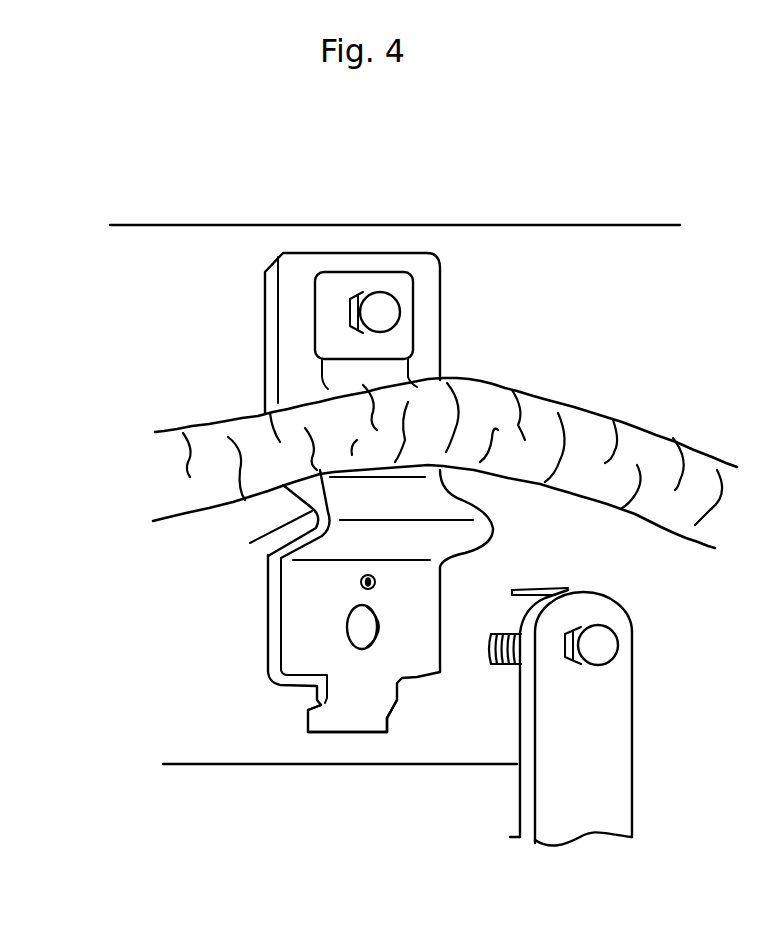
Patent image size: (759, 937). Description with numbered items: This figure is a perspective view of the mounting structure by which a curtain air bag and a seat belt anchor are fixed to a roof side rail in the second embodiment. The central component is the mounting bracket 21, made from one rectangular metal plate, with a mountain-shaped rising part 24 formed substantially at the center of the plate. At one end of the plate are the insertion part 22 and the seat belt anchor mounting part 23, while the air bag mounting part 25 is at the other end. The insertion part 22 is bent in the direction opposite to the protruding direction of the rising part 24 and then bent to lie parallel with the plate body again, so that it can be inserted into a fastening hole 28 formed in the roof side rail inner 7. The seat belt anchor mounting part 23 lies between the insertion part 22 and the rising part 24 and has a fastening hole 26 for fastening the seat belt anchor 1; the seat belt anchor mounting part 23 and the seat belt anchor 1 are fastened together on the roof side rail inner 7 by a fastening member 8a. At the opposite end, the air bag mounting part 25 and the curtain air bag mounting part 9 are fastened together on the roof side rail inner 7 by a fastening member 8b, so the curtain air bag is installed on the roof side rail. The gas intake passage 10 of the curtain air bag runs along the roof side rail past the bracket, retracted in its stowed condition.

The seat belt anchor 1 is at (596, 794).
The roof side rail inner 7 is at (508, 240).
The fastening member 8a is at (600, 648).
The fastening member 8b is at (383, 305).
The curtain air bag mounting part 9 is at (331, 283).
The gas intake passage 10 is at (660, 505).
The mounting bracket 21 is at (454, 365).
The insertion part 22 is at (350, 707).
The seat belt anchor mounting part 23 is at (293, 650).
The rising part 24 is at (250, 543).
The air bag mounting part 25 is at (300, 318).
The fastening hole 26 is at (334, 627).
The fastening hole 28 is at (392, 733).